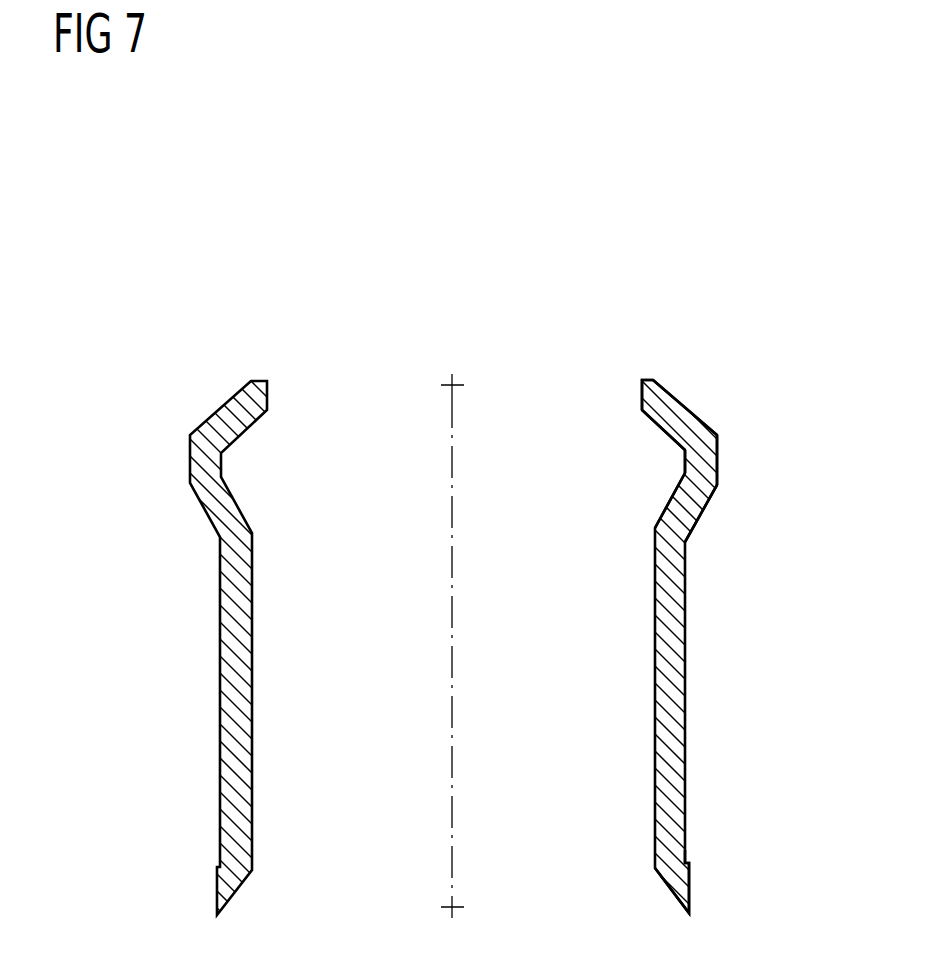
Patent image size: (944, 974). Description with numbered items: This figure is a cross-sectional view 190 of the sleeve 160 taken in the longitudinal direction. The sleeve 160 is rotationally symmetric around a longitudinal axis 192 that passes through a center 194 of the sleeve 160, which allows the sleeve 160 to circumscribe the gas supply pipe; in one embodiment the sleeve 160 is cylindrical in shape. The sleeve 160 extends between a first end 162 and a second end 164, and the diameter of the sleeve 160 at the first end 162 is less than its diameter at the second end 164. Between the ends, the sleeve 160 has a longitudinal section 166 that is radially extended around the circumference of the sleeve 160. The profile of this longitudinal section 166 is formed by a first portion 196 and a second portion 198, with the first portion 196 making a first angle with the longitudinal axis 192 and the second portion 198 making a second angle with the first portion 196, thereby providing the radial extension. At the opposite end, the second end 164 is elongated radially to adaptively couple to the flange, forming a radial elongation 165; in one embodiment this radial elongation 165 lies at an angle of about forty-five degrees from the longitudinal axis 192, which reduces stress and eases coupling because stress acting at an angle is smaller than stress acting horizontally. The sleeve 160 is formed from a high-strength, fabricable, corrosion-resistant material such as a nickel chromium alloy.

The cross-sectional view 190 is at (288, 198).
The longitudinal axis 192 is at (452, 528).
The center 194 is at (452, 385).
The sleeve 160 is at (718, 634).
The first end 162 is at (644, 381).
The first portion 196 is at (670, 405).
The longitudinal section 166 is at (729, 447).
The second portion 198 is at (690, 505).
The radial elongation 165 is at (689, 862).
The second end 164 is at (689, 892).